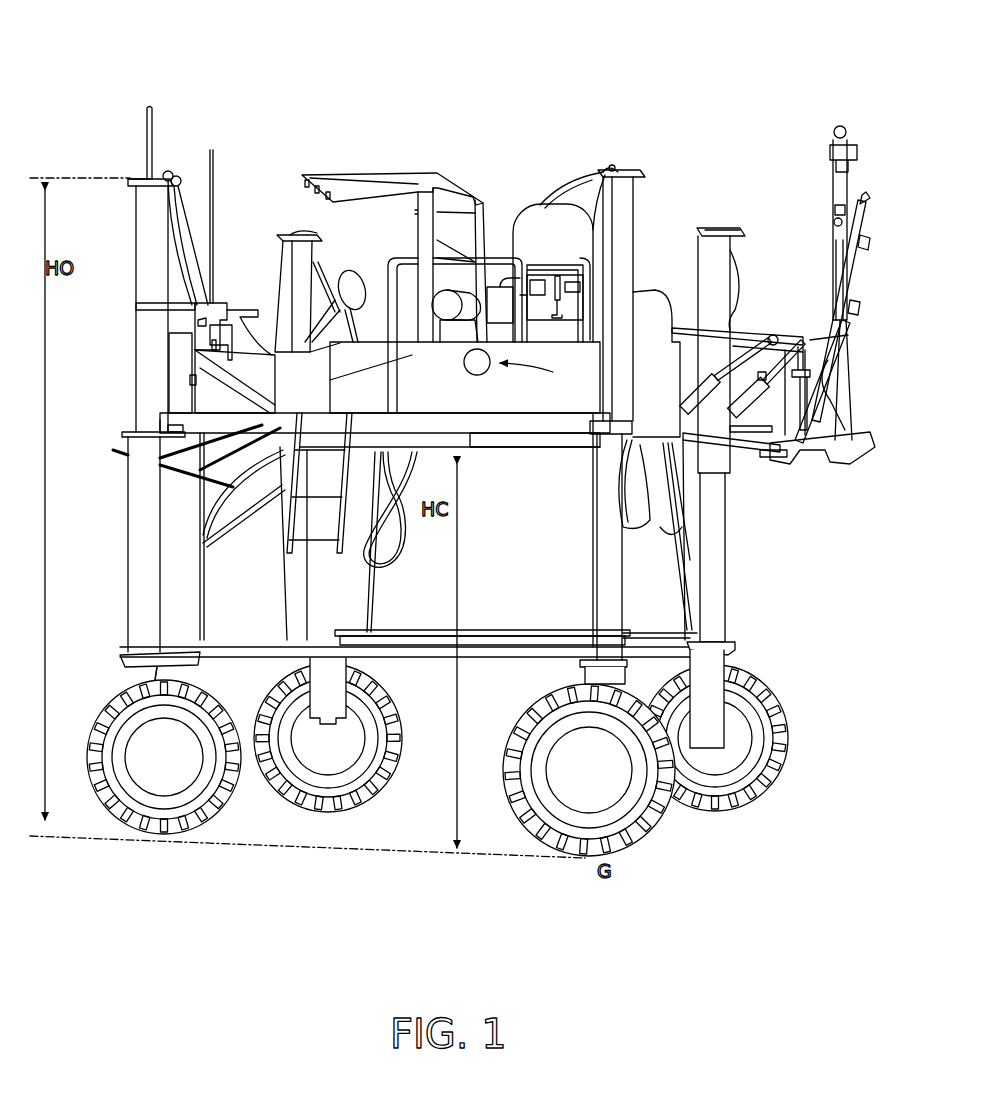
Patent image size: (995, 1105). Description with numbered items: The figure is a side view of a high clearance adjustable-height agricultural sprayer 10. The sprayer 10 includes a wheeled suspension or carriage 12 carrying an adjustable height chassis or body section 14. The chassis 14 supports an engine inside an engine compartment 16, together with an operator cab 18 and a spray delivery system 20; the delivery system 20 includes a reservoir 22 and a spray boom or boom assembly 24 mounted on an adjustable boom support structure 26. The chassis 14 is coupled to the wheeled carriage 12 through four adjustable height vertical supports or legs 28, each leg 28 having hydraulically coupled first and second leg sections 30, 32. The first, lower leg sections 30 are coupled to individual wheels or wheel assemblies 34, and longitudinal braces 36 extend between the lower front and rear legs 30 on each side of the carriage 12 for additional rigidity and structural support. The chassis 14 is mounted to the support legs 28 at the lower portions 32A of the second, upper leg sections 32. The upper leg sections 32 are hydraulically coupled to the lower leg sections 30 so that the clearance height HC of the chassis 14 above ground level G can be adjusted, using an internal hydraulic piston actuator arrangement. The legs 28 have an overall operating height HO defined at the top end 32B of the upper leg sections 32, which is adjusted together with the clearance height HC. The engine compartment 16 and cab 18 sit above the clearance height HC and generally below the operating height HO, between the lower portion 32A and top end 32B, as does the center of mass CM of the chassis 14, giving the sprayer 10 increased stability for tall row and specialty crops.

The high clearance adjustable-height agricultural sprayer 10 is at (125, 58).
The wheeled suspension or carriage 12 is at (812, 772).
The adjustable height chassis or body section 14 is at (528, 400).
The engine compartment 16 is at (500, 300).
The operator cab 18 is at (378, 180).
The spray delivery system 20 is at (745, 60).
The reservoir 22 is at (570, 208).
The spray boom or boom assembly 24 is at (833, 200).
The adjustable boom support structure 26 is at (812, 475).
The adjustable height vertical supports or legs 28 is at (163, 160).
The first or lower leg sections 30 is at (140, 505).
The second or upper leg sections 32 is at (140, 218).
The lower portion of upper leg section 32A is at (140, 433).
The top end of upper leg section 32B is at (145, 181).
The wheels or wheel assemblies 34 is at (183, 772).
The longitudinal braces 36 is at (513, 653).